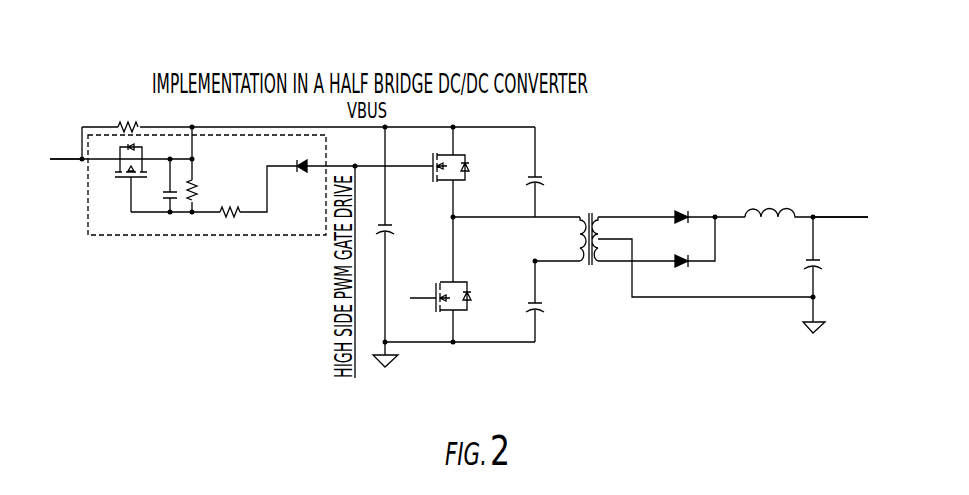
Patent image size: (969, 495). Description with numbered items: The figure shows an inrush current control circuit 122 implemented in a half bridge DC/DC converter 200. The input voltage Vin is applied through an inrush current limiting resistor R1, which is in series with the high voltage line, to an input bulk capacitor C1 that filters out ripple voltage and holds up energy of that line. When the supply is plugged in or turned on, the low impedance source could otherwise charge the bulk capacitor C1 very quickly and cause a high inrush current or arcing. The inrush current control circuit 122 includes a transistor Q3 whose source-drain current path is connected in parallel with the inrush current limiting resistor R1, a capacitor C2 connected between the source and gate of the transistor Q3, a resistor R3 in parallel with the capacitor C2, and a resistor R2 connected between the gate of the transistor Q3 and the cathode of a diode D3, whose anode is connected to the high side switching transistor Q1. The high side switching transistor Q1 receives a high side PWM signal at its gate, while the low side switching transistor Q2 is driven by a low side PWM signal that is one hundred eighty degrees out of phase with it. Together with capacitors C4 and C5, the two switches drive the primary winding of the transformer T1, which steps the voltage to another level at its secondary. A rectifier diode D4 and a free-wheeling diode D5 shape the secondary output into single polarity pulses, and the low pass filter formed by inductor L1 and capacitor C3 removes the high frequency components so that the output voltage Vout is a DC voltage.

The input voltage Vin is at (64, 150).
The inrush current limiting resistor R1 is at (141, 117).
The transistor Q3 is at (119, 178).
The capacitor C2 is at (163, 185).
The resistor R3 is at (202, 181).
The resistor R2 is at (231, 199).
The diode D3 is at (288, 157).
The inrush current control circuit 122 is at (195, 236).
The half bridge DC/DC converter 200 is at (252, 310).
The input bulk capacitor C1 is at (396, 217).
The high side switching transistor Q1 is at (458, 184).
The low side switching transistor Q2 is at (448, 309).
The capacitor C4 is at (545, 169).
The capacitor C5 is at (547, 296).
The transformer T1 is at (686, 239).
The rectifier diode D4 is at (710, 202).
The free-wheeling diode D5 is at (695, 242).
The inductor L1 is at (806, 198).
The output voltage Vout is at (840, 205).
The capacitor C3 is at (825, 257).